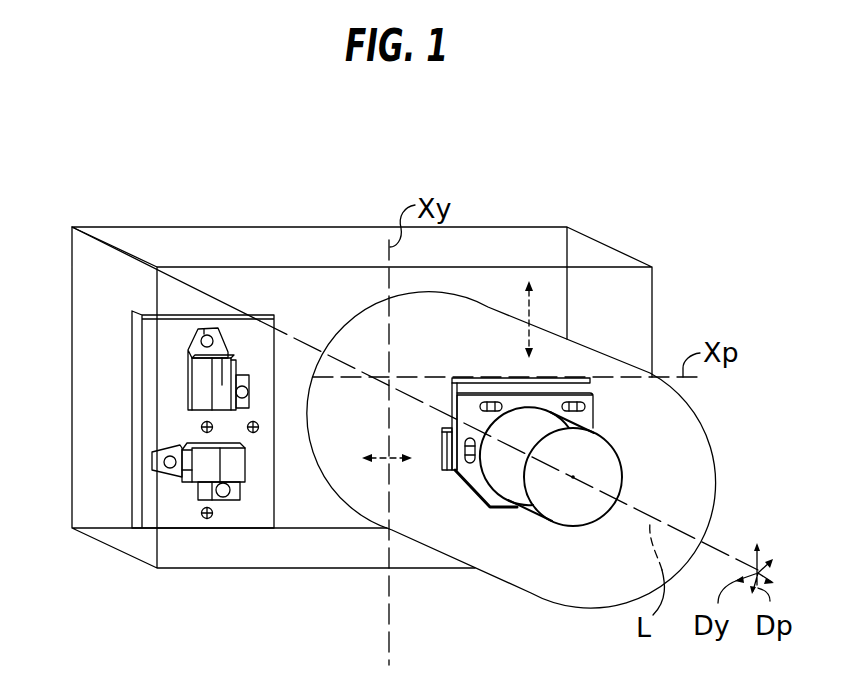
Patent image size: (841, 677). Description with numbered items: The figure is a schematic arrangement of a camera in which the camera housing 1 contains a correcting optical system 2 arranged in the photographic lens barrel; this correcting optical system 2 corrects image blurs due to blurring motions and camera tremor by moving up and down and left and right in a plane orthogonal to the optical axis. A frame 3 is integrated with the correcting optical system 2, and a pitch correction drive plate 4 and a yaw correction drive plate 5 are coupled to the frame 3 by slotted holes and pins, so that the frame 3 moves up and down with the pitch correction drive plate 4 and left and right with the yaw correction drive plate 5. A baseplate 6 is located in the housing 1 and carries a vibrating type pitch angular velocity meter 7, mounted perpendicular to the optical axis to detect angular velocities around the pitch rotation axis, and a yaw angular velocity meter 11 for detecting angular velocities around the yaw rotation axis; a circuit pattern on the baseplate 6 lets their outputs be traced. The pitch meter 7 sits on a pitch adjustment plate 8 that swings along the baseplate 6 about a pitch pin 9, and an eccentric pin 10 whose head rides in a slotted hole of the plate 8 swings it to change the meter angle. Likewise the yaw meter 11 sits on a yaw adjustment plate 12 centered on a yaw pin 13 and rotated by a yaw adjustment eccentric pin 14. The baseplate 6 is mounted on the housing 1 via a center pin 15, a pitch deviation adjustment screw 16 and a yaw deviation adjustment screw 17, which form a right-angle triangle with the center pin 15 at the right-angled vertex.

The camera housing 1 is at (72, 483).
The correcting optical system 2 is at (556, 520).
The frame 3 is at (594, 418).
The pitch correction drive plate 4 is at (452, 470).
The yaw correction drive plate 5 is at (434, 470).
The baseplate 6 is at (252, 528).
The pitch angular velocity meter 7 is at (183, 483).
The pitch adjustment plate 8 is at (173, 480).
The pitch pin 9 is at (160, 466).
The eccentric pin 10 is at (240, 490).
The yaw angular velocity meter 11 is at (203, 387).
The yaw adjustment plate 12 is at (208, 327).
The yaw pin 13 is at (190, 338).
The yaw adjustment eccentric pin 14 is at (250, 378).
The center pin 15 is at (201, 427).
The pitch deviation adjustment screw 16 is at (256, 432).
The yaw deviation adjustment screw 17 is at (210, 522).